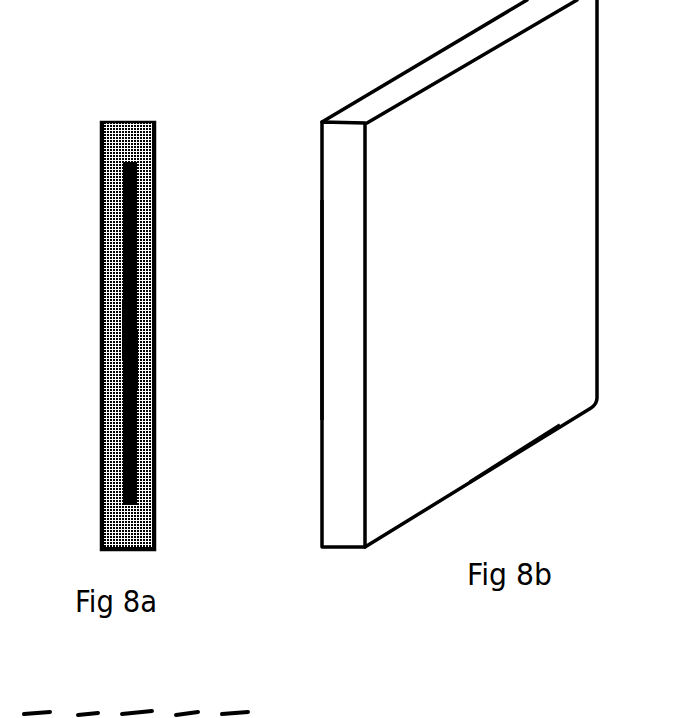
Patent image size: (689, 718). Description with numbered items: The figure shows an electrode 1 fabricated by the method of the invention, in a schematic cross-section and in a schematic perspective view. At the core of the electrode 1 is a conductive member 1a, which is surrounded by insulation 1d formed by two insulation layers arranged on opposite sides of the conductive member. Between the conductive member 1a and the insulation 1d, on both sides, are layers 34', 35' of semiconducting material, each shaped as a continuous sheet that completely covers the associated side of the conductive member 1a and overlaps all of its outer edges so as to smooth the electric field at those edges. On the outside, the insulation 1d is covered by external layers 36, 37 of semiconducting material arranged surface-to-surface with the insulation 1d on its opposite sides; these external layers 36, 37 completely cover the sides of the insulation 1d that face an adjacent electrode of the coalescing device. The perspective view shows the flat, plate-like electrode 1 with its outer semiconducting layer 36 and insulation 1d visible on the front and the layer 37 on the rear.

In FIG. 8a, the electrode 1 is at (140, 86).
In FIG. 8b, the electrode 1 is at (377, 66).
In FIG. 8a, the conductive member 1a is at (156, 232).
In FIG. 8a, the insulation 1d is at (156, 135).
In FIG. 8b, the insulation 1d is at (338, 340).
In FIG. 8a, the layer of semiconducting material 34' is at (86, 320).
In FIG. 8a, the layer of semiconducting material 35' is at (175, 360).
In FIG. 8a, the external layer of semiconducting material 36 is at (103, 443).
In FIG. 8b, the external layer of semiconducting material 36 is at (319, 168).
In FIG. 8a, the external layer of semiconducting material 37 is at (156, 447).
In FIG. 8b, the external layer of semiconducting material 37 is at (505, 455).